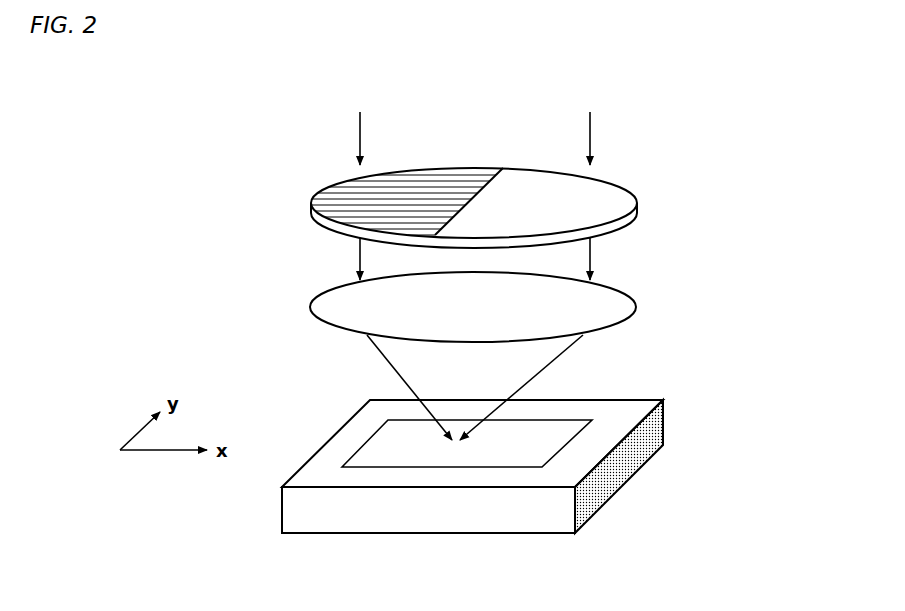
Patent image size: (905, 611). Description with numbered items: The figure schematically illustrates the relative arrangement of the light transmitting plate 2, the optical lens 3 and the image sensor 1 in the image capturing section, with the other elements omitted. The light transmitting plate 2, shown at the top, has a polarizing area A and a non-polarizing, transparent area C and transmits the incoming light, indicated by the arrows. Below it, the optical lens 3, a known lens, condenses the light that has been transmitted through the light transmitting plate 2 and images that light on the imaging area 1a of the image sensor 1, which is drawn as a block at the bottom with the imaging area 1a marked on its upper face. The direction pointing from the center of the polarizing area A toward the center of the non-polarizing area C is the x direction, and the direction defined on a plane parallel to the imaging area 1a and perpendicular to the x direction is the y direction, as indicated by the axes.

The image sensor 1 is at (520, 435).
The imaging area 1a is at (432, 425).
The light transmitting plate 2 is at (515, 149).
The optical lens 3 is at (519, 273).
The polarizing area A is at (407, 142).
The non-polarizing area C is at (551, 120).